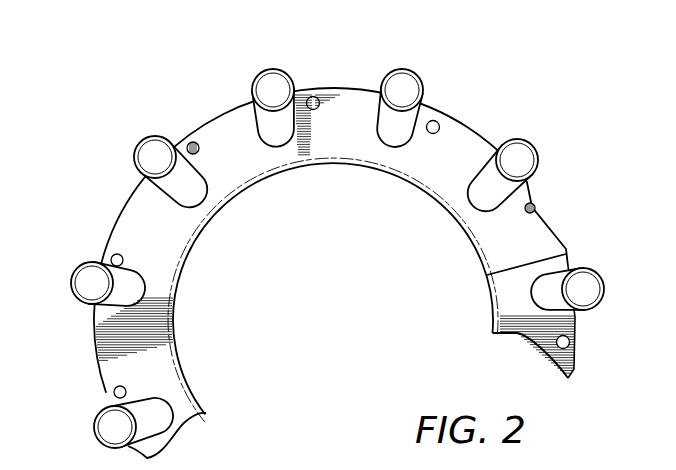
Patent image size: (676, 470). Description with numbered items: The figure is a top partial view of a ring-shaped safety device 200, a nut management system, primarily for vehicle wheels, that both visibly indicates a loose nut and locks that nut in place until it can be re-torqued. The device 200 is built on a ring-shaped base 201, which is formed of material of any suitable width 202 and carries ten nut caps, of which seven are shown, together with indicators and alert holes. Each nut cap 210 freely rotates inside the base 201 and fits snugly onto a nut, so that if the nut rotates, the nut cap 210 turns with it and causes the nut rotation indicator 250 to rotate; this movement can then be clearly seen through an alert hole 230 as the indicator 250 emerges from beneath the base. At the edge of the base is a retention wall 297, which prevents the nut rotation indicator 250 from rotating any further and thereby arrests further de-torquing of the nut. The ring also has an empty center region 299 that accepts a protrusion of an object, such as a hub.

The device 200 is at (183, 90).
The base 201 is at (356, 95).
The width 202 is at (507, 278).
The nut cap 210 is at (518, 150).
The alert hole 230 is at (532, 204).
The nut rotation indicator 250 is at (536, 214).
The retention wall 297 is at (133, 223).
The empty center region 299 is at (338, 327).